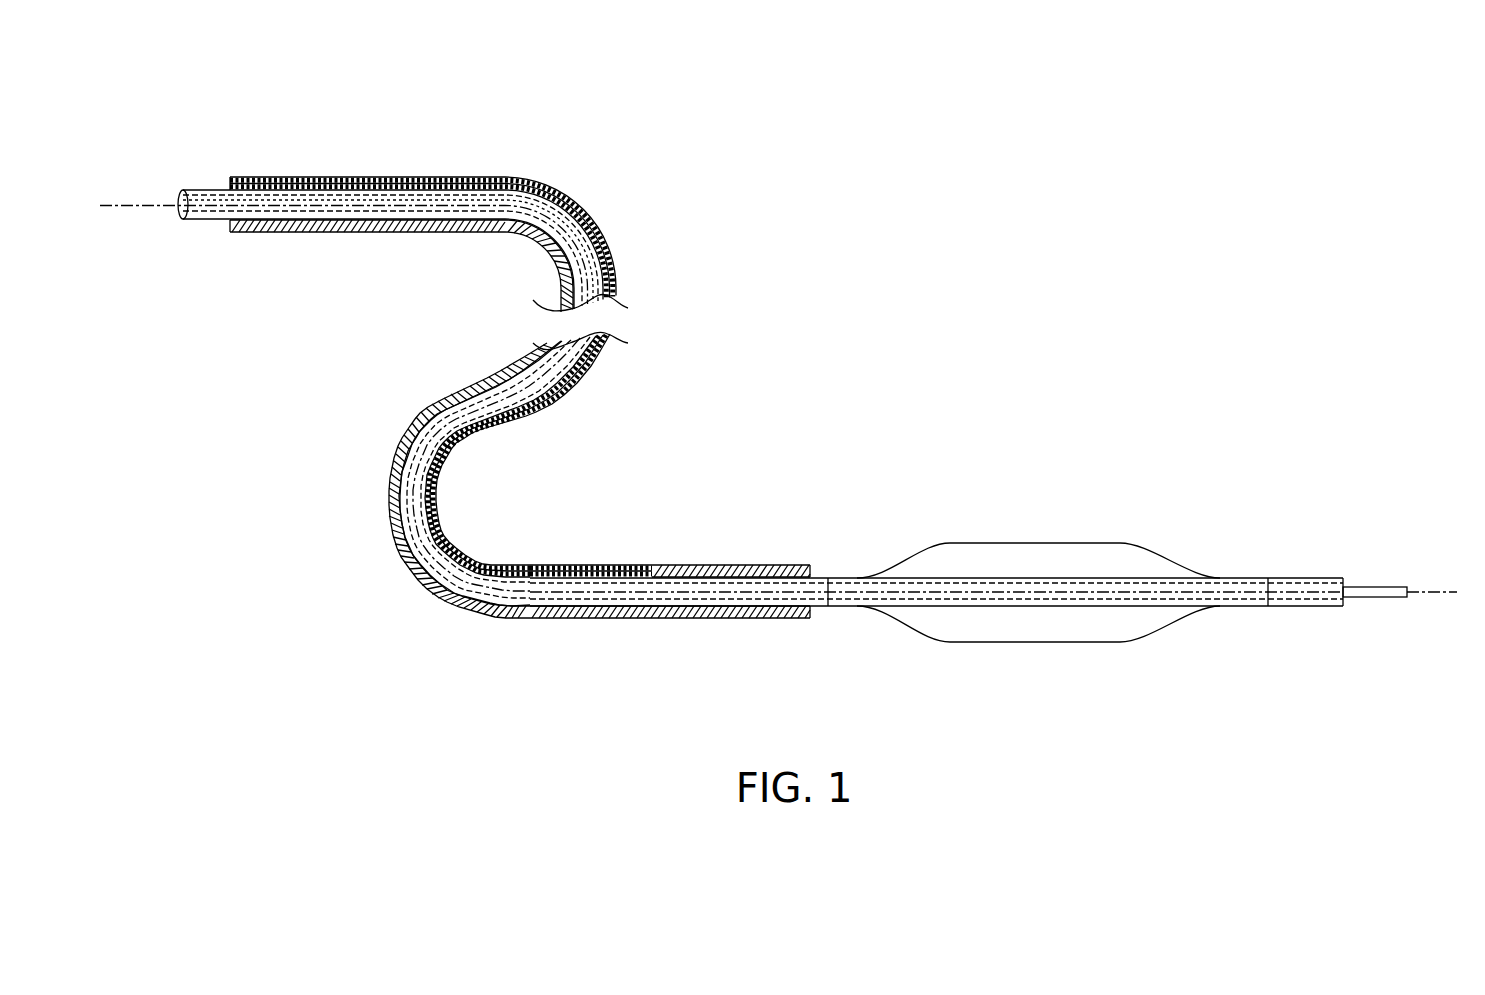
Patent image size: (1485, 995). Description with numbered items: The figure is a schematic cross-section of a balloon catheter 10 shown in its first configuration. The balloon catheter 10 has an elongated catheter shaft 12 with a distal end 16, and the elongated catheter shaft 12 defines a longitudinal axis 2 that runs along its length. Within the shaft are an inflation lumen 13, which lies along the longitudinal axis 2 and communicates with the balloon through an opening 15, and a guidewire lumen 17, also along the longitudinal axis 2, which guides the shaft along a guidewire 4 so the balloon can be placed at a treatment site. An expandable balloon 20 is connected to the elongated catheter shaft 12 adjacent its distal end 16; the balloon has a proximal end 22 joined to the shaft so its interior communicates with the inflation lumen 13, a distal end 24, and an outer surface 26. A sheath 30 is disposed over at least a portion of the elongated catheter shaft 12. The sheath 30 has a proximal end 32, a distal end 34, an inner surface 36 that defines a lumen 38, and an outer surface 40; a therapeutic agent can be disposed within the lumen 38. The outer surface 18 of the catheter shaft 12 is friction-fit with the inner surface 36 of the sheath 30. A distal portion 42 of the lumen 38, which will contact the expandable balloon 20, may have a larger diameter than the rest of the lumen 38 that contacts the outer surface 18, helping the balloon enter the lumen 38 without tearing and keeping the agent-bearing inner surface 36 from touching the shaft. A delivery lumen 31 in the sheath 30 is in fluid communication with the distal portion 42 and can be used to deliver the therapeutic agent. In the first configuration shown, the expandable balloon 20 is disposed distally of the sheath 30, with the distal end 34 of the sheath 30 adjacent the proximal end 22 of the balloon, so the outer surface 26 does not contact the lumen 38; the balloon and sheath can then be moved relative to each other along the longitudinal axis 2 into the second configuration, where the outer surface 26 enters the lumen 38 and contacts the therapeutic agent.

The longitudinal axis 2 is at (463, 205).
The guidewire 4 is at (1381, 598).
The balloon catheter 10 is at (1015, 236).
The elongated catheter shaft 12 is at (408, 198).
The inflation lumen 13 is at (183, 199).
The opening 15 is at (1007, 580).
The distal end 16 is at (1344, 578).
The guidewire lumen 17 is at (181, 211).
The outer surface 18 is at (203, 221).
The expandable balloon 20 is at (1062, 648).
The proximal end 22 is at (829, 578).
The distal end 24 is at (1268, 578).
The outer surface 26 is at (1071, 543).
The sheath 30 is at (421, 586).
The delivery lumen 31 is at (296, 181).
The proximal end 32 is at (232, 179).
The distal end 34 is at (808, 615).
The inner surface 36 is at (395, 515).
The lumen 38 is at (520, 605).
The outer surface 40 is at (443, 506).
The distal portion 42 is at (636, 560).